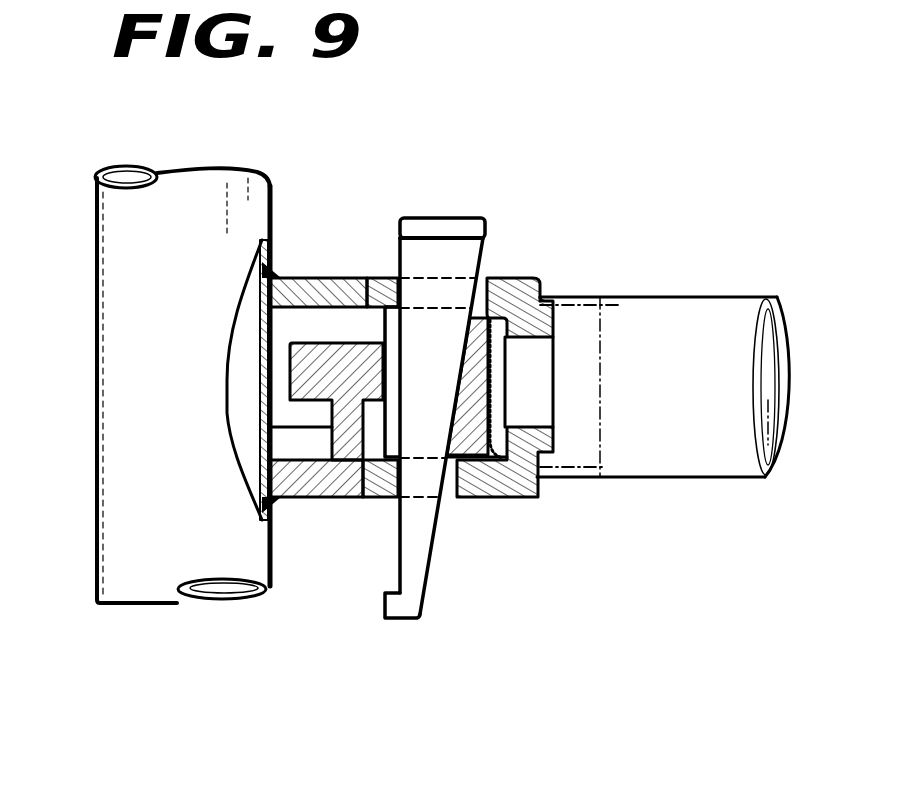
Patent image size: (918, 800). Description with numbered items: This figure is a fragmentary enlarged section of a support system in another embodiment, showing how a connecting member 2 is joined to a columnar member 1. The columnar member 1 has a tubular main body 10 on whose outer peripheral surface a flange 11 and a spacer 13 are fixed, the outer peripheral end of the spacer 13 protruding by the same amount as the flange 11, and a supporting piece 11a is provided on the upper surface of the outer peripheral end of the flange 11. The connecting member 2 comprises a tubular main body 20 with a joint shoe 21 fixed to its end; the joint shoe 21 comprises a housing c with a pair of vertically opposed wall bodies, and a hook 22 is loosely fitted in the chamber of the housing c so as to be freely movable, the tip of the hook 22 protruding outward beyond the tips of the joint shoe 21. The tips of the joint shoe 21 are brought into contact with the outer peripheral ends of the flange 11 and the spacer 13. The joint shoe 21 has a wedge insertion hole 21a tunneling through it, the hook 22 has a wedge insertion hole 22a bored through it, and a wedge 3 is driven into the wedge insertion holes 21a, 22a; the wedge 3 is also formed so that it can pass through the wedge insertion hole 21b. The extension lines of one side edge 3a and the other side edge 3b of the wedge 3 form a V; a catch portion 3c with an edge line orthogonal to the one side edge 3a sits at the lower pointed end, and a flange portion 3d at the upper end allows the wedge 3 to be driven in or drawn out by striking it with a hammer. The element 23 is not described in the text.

The columnar member 1 is at (88, 393).
The connecting member 2 is at (666, 314).
The wedge 3 is at (474, 391).
The one side edge 3a is at (397, 497).
The other side edge 3b is at (482, 275).
The catch portion 3c is at (409, 605).
The flange portion 3d is at (433, 227).
The tubular main body 10 is at (373, 207).
The flange 11 is at (225, 491).
The supporting piece 11a is at (327, 403).
The spacer 13 is at (327, 278).
The tubular main body 20 is at (647, 447).
The joint shoe 21 is at (550, 413).
The wedge insertion hole 21a is at (513, 280).
The wedge insertion hole 21b is at (450, 499).
The hook 22 is at (258, 423).
The wedge insertion hole 22a is at (335, 486).
The groove 23 is at (560, 395).
The housing c is at (507, 503).